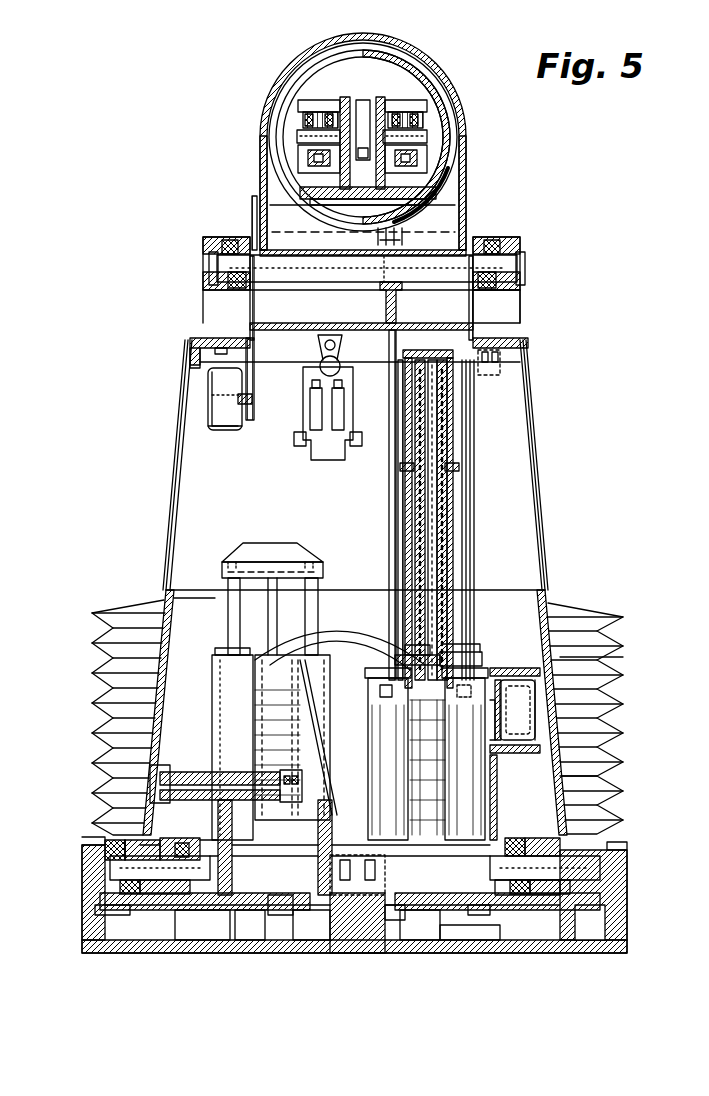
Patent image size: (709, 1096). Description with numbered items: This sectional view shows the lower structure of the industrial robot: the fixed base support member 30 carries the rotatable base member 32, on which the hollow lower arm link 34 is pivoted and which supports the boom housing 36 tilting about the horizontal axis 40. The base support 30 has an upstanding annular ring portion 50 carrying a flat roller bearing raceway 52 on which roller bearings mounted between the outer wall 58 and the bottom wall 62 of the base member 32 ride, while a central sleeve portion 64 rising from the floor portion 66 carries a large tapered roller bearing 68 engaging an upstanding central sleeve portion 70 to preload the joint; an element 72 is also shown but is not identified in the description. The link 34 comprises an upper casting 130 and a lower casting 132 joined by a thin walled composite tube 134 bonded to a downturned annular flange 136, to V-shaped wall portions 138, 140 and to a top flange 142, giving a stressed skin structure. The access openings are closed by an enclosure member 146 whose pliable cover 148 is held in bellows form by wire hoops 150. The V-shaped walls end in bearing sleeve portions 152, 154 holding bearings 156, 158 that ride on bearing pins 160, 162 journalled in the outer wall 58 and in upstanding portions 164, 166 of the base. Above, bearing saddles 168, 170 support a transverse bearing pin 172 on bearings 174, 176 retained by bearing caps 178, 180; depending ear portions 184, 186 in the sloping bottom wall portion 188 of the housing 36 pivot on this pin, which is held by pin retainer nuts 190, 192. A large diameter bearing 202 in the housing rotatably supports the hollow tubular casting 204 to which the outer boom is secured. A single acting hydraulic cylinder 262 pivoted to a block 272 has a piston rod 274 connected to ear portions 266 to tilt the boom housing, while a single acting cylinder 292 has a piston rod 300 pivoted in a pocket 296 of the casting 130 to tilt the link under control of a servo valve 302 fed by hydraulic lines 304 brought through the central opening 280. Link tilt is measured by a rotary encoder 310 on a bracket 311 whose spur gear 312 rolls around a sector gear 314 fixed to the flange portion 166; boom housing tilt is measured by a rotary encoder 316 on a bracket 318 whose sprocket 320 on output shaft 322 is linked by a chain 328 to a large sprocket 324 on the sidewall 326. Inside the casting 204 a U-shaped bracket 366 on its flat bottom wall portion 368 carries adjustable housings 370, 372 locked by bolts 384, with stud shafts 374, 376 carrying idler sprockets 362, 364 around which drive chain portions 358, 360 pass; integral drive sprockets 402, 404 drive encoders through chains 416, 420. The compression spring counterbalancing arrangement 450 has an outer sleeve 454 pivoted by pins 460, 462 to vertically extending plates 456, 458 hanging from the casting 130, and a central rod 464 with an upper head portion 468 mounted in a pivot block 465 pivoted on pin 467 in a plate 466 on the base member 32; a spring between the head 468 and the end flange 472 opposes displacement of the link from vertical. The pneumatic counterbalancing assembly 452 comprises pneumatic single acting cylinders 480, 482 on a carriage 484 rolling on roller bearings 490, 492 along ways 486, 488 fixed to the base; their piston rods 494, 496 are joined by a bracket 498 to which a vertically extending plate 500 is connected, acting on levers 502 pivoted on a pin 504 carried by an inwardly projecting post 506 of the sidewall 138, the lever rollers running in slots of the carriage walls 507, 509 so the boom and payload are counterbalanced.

The base support member 30 is at (605, 950).
The base member 32 is at (100, 896).
The lower arm link 34 is at (175, 483).
The boom housing 36 is at (466, 200).
The bearing rod axis 40 is at (217, 268).
The upstanding annular ring portion 50 is at (610, 912).
The flat roller bearing raceway 52 is at (600, 895).
The outer wall 58 is at (105, 848).
The bottom wall 62 is at (478, 912).
The central sleeve portion 64 is at (405, 912).
The floor portion 66 is at (455, 926).
The tapered roller bearing 68 is at (385, 912).
The upstanding central sleeve portion 70 is at (310, 912).
The bracket 72 is at (95, 910).
The upper casting 130 is at (200, 340).
The lower casting 132 is at (530, 590).
The thin walled tube 134 is at (175, 520).
The downturned annular flange 136 is at (193, 362).
The V-shaped wall portion 138 is at (150, 740).
The V-shaped wall portion 140 is at (560, 740).
The top flange 142 is at (340, 590).
The enclosure member 146 is at (585, 612).
The cover 148 is at (600, 790).
The wire hoops 150 is at (623, 660).
The bearing sleeve portion 152 is at (95, 905).
The bearing sleeve portion 154 is at (535, 895).
The bearing 156 is at (175, 840).
The bearing 158 is at (515, 845).
The bearing pin 160 is at (110, 866).
The bearing pin 162 is at (600, 856).
The upstanding portion 164 is at (200, 912).
The upstanding wall portion 166 is at (500, 830).
The bearing saddle 168 is at (228, 284).
The bearing saddle 170 is at (495, 296).
The transverse bearing pin 172 is at (500, 280).
The bearings 174 is at (230, 240).
The bearings 176 is at (492, 240).
The bearing cap 178 is at (210, 240).
The bearing cap 180 is at (512, 240).
The depending ear portion 184 is at (250, 326).
The depending ear portion 186 is at (500, 338).
The sloping bottom wall portion 188 is at (318, 284).
The pin retainer nut 190 is at (210, 262).
The pin retainer nut 192 is at (524, 265).
The large diameter bearing 202 is at (464, 180).
The tubular casting 204 is at (438, 88).
The single acting hydraulic cylinder 262 is at (290, 788).
The depending ear portions 266 is at (378, 270).
The block 272 is at (380, 893).
The piston rod 274 is at (396, 505).
The central opening 280 is at (360, 905).
The single acting hydraulic cylinder 292 is at (492, 680).
The pocket 296 is at (492, 362).
The piston rod 300 is at (475, 485).
The servo valve 302 is at (303, 462).
The hydraulic pressure and return lines 304 is at (312, 420).
The rotary encoder 310 is at (530, 692).
The bracket 311 is at (535, 710).
The spur gear 312 is at (505, 668).
The sector gear 314 is at (530, 745).
The rotary encoder 316 is at (225, 428).
The bracket 318 is at (212, 378).
The sprocket 320 is at (232, 410).
The output shaft 322 is at (238, 398).
The large sprocket 324 is at (254, 215).
The sidewall 326 is at (265, 170).
The chain 328 is at (254, 352).
The drive chain portion 358 is at (310, 118).
The drive chain portion 360 is at (425, 104).
The idler sprocket 362 is at (310, 128).
The idler sprocket 364 is at (418, 122).
The U-shaped bracket 366 is at (340, 190).
The flat bottom wall portion 368 is at (385, 198).
The housing 370 is at (338, 100).
The housing 372 is at (405, 95).
The stud shaft 374 is at (300, 137).
The stud shaft 376 is at (425, 138).
The bolts 384 is at (360, 112).
The drive sprocket 402 is at (312, 164).
The drive sprocket 404 is at (415, 160).
The chain 416 is at (318, 100).
The chain 420 is at (445, 110).
The compression spring counterbalancing arrangement 450 is at (500, 442).
The pneumatic counterbalancing assembly 452 is at (185, 580).
The outer sleeve 454 is at (447, 504).
The vertically extending plate 456 is at (453, 422).
The vertically extending plate 458 is at (388, 378).
The pin 460 is at (459, 467).
The pin 462 is at (398, 470).
The central rod 464 is at (437, 522).
The pivot block 465 is at (318, 635).
The plate 466 is at (460, 770).
The pin 467 is at (395, 660).
The upper head portion 468 is at (446, 350).
The end flange 472 is at (450, 652).
The pneumatic single acting cylinder 480 is at (218, 675).
The pneumatic single acting cylinder 482 is at (312, 642).
The carriage 484 is at (110, 695).
The way 486 is at (230, 826).
The way 488 is at (322, 828).
The roller bearing 490 is at (240, 905).
The roller bearing 492 is at (275, 905).
The piston rod 494 is at (225, 605).
The piston rod 496 is at (318, 600).
The bracket 498 is at (262, 548).
The vertically extending plate 500 is at (275, 578).
The levers 502 is at (270, 770).
The pin 504 is at (388, 760).
The inwardly projecting post 506 is at (150, 780).
The wall 507 is at (270, 700).
The wall 509 is at (312, 730).